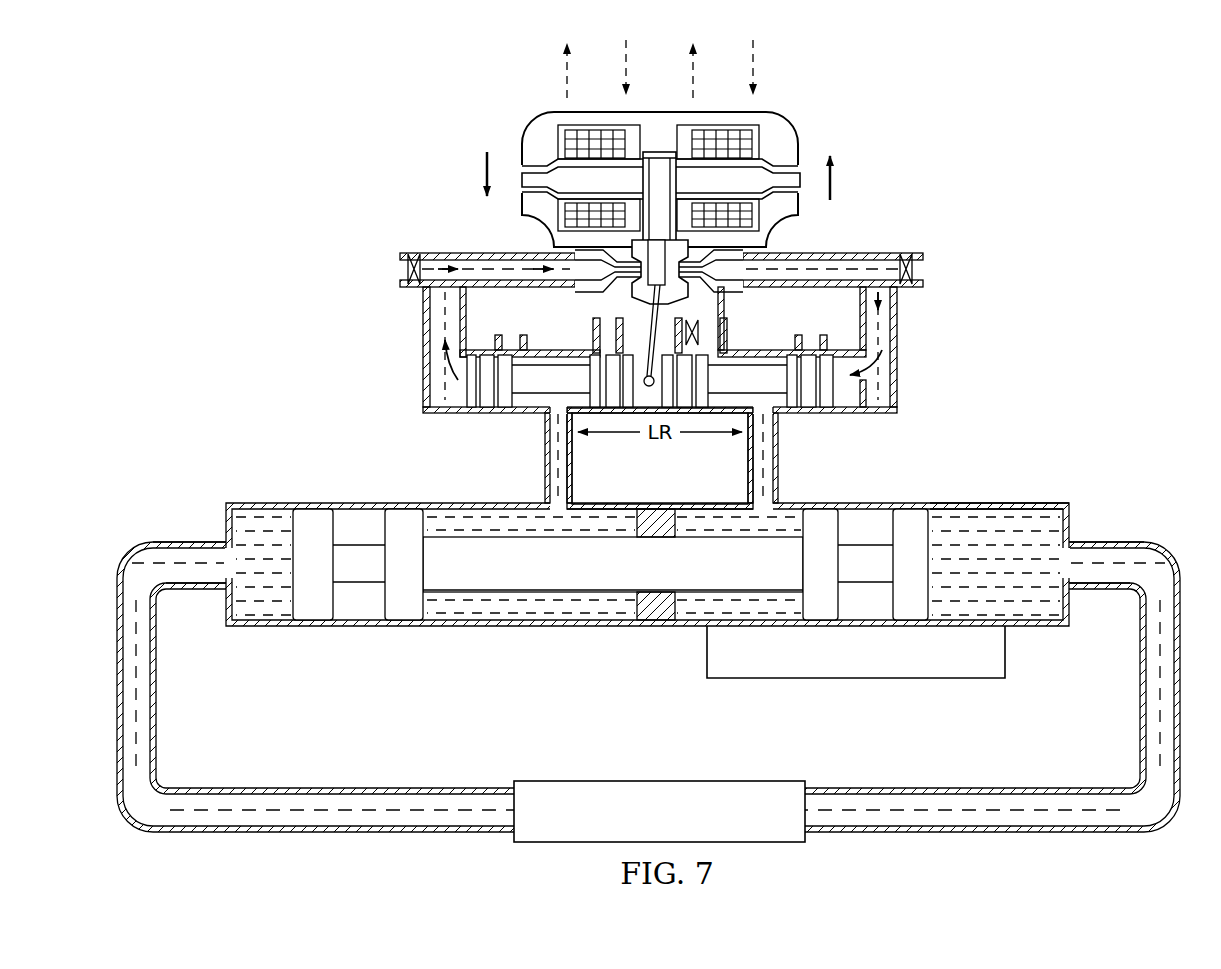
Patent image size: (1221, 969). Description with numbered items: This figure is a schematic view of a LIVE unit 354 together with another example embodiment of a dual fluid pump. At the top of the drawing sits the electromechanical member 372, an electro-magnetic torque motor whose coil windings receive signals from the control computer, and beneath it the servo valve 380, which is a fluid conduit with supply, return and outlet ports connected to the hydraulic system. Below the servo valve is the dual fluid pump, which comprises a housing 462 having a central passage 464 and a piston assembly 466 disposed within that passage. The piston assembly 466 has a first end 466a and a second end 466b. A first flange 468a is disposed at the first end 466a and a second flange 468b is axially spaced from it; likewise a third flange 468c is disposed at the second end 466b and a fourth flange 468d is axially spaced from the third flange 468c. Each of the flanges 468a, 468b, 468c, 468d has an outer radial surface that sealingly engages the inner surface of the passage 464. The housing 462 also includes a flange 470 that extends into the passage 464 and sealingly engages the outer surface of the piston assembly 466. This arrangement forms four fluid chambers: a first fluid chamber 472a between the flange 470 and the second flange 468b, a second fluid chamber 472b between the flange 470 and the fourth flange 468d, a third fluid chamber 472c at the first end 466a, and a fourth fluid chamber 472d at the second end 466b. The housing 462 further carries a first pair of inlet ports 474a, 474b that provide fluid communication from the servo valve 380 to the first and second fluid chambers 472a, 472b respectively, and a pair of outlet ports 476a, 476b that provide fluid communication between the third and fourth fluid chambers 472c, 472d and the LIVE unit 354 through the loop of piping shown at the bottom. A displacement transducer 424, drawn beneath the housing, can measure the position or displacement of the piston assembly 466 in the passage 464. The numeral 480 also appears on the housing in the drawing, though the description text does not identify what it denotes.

The electromechanical member 372 is at (790, 92).
The servo valve 380 is at (974, 290).
The LIVE unit 354 is at (716, 780).
The displacement transducer 424 is at (1007, 651).
The housing 462 is at (508, 628).
The central passage 464 is at (353, 608).
The piston assembly 466 is at (571, 578).
The first end 466a is at (934, 559).
The second end 466b is at (288, 538).
The first flange 468a is at (906, 516).
The second flange 468b is at (818, 516).
The third flange 468c is at (316, 516).
The fourth flange 468d is at (404, 516).
The flange 470 is at (630, 527).
The first fluid chamber 472a is at (688, 516).
The second fluid chamber 472b is at (472, 516).
The third fluid chamber 472c is at (1037, 516).
The fourth fluid chamber 472d is at (266, 610).
The inlet port 474a is at (776, 516).
The inlet port 474b is at (548, 516).
The outlet port 476a is at (1062, 565).
The outlet port 476b is at (233, 565).
The cylinder end wall 480 is at (973, 504).